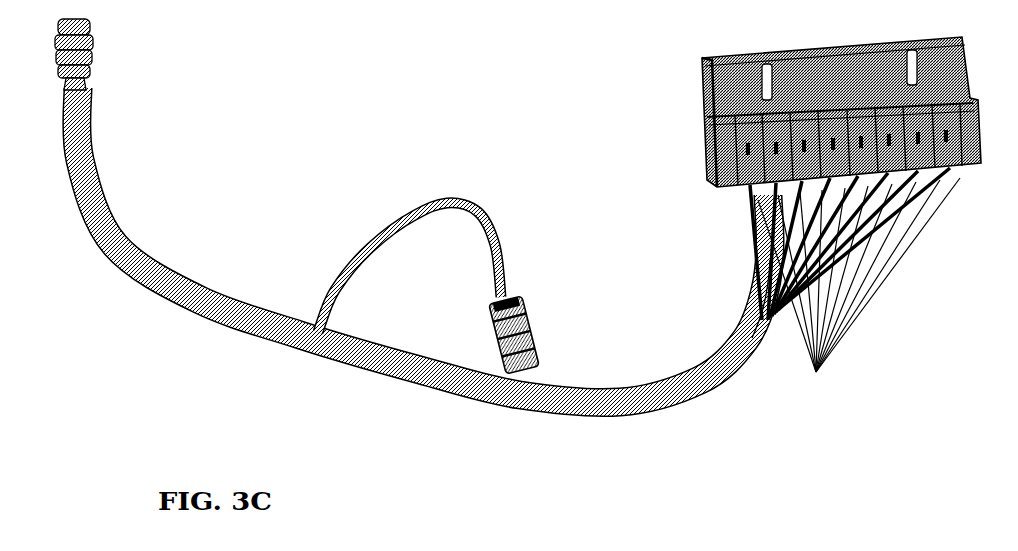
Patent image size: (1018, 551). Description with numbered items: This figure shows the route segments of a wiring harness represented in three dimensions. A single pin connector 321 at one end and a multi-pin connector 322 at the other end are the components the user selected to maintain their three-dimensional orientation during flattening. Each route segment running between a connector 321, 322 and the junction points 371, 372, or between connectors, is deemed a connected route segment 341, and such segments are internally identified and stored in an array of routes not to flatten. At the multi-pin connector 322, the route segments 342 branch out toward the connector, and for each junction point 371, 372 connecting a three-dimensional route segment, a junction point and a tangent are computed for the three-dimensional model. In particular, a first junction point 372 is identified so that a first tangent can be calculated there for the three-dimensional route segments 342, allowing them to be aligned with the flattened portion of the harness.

The single pin connector 321 is at (85, 63).
The multi-pin connector 322 is at (702, 100).
The connected route segment 341 is at (117, 244).
The route segments 342 is at (816, 378).
The junction point 371 is at (335, 362).
The first junction point 372 is at (752, 335).